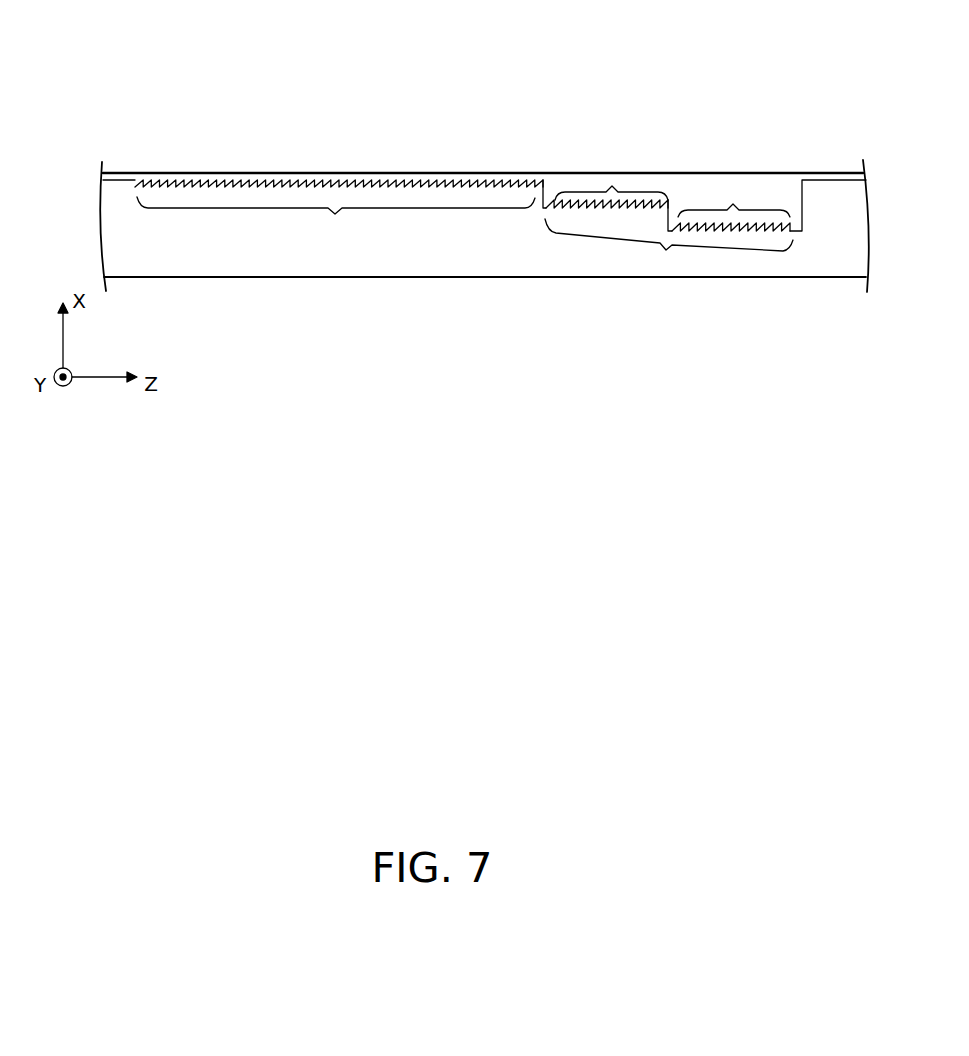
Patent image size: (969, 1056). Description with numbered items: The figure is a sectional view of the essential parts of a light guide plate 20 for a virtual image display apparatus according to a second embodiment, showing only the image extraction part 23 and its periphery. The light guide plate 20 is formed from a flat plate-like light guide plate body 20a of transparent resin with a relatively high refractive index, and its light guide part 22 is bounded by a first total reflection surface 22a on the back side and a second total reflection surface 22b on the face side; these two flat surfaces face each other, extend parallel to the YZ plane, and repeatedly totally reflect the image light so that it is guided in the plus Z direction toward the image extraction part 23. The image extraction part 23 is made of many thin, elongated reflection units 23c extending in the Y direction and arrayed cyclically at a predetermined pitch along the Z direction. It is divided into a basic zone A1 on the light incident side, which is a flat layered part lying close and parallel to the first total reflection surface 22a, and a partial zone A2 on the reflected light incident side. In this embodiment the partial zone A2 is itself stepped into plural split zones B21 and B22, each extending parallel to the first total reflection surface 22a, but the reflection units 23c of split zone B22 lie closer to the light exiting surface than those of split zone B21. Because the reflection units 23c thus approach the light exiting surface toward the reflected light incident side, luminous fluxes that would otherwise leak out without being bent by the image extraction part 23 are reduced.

The light guide plate 20 is at (793, 93).
The light guide plate body 20a is at (253, 270).
The light guide part 22 is at (390, 263).
The first total reflection surface 22a is at (116, 172).
The second total reflection surface 22b is at (138, 278).
The image extraction part 23 is at (374, 167).
The reflection units 23c is at (280, 187).
The basic zone A1 is at (336, 220).
The partial zone A2 is at (669, 248).
The split zone B21 is at (613, 185).
The split zone B22 is at (734, 198).